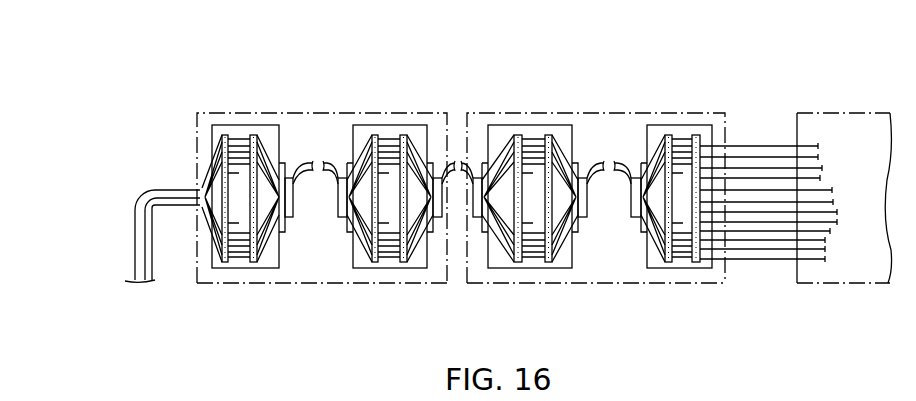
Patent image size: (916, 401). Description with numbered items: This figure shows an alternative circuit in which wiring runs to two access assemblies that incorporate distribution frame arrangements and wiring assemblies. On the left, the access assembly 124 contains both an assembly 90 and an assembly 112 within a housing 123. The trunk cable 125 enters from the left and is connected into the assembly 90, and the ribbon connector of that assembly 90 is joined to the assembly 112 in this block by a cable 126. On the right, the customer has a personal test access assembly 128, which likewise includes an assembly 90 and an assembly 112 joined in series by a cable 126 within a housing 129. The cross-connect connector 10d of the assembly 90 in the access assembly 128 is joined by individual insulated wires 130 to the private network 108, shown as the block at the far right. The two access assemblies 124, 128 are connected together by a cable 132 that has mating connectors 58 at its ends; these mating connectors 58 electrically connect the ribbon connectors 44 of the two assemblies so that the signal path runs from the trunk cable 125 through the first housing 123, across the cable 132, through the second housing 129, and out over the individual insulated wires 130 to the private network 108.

The cross-connect connector 10d is at (203, 189).
The ribbon connector 44 is at (436, 178).
The cable 132 is at (453, 165).
The cable 126 is at (311, 158).
The individual insulated wires 130 is at (768, 145).
The private network 108 is at (870, 112).
The trunk cable 125 is at (142, 252).
The assembly 90 is at (260, 270).
The mating connectors 58 is at (287, 218).
The housing 123 is at (322, 283).
The access assembly 124 is at (333, 286).
The assembly 112 is at (408, 270).
The housing 129 is at (518, 283).
The personal test access assembly 128 is at (658, 286).